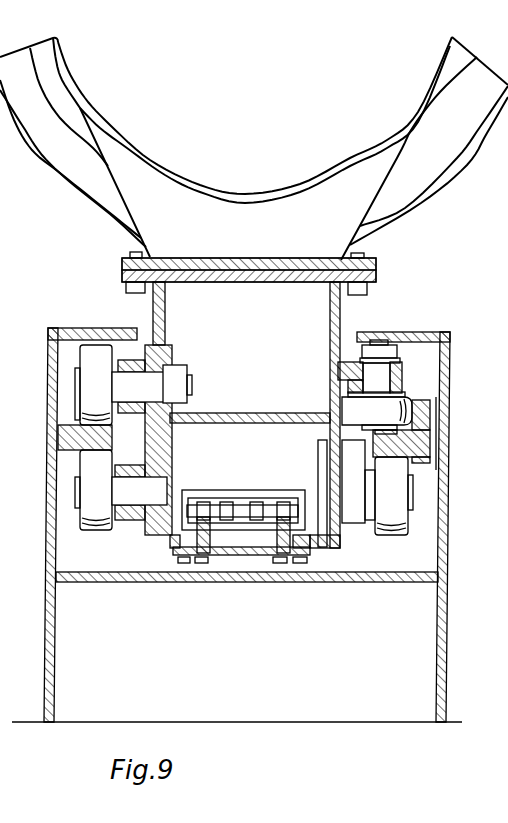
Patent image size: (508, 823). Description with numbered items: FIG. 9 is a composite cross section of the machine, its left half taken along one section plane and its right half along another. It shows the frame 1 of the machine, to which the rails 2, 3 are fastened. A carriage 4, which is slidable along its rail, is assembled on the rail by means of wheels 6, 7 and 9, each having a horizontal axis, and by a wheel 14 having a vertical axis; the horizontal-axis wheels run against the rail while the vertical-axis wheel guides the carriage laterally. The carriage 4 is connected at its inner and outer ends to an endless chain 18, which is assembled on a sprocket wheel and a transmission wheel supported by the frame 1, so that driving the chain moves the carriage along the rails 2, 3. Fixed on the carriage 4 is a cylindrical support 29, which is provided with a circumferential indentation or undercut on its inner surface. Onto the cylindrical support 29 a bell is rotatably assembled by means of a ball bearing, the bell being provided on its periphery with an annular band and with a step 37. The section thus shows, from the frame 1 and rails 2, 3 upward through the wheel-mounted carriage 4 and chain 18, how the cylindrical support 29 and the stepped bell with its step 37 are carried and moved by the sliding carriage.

The frame 1 is at (450, 553).
The rail 2 is at (85, 436).
The rail 3 is at (423, 445).
The carriage 4 is at (377, 278).
The wheel 6 is at (88, 381).
The wheel 7 is at (92, 528).
The wheel 9 is at (390, 527).
The wheel 14 is at (395, 406).
The endless chain 18 is at (232, 503).
The cylindrical support 29 is at (385, 141).
The step 37 is at (421, 205).